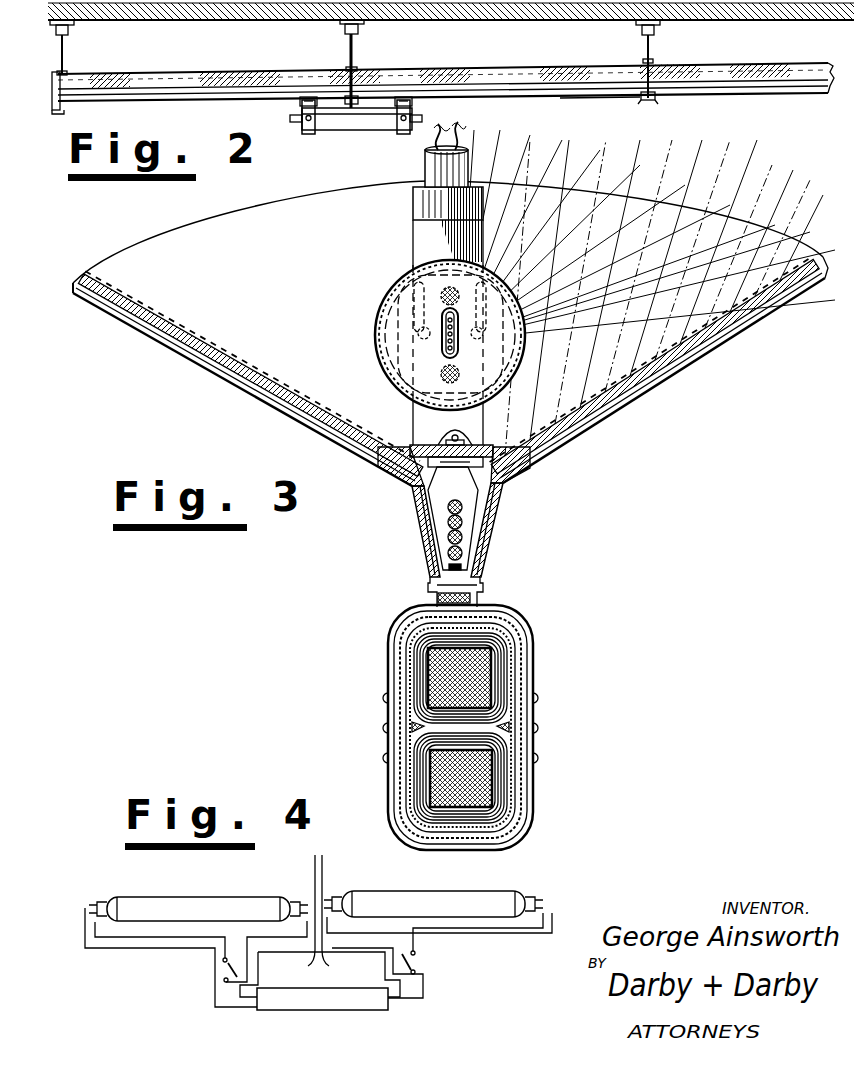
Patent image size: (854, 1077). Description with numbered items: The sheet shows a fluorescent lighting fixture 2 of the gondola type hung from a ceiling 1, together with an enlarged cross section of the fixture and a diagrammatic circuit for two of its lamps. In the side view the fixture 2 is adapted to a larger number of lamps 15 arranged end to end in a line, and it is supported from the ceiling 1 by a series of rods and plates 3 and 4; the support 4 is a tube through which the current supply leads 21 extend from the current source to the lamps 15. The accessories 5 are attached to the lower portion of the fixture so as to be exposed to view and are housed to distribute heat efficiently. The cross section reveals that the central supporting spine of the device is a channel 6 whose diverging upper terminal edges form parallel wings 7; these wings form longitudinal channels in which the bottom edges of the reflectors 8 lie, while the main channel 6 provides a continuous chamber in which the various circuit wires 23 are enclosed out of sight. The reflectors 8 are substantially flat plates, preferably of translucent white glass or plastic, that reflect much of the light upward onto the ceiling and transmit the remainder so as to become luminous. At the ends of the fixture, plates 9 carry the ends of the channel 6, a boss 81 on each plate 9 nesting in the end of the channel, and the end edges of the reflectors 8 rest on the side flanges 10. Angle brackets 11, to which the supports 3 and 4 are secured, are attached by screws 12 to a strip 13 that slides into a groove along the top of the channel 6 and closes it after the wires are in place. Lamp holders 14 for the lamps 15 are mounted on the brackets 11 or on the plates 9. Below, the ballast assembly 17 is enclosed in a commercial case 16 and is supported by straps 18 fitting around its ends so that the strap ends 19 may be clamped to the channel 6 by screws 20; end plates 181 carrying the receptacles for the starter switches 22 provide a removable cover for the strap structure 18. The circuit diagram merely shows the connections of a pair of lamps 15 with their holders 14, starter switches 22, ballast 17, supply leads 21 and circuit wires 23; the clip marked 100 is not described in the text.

In FIG. 2, the ceiling 1 is at (528, 21).
In FIG. 2, the fixture 2 is at (219, 71).
In FIG. 3, the fixture 2 is at (598, 473).
In FIG. 2, the rod and plate support 3 is at (64, 54).
In FIG. 2, the tubular support 4 is at (354, 55).
In FIG. 3, the tubular support 4 is at (425, 168).
In FIG. 2, the accessories 5 is at (350, 130).
In FIG. 3, the accessories 5 is at (560, 740).
In FIG. 2, the channel 6 is at (596, 98).
In FIG. 3, the channel 6 is at (487, 503).
In FIG. 3, the wings 7 is at (380, 478).
In FIG. 2, the reflectors 8 is at (290, 72).
In FIG. 3, the reflectors 8 is at (280, 372).
In FIG. 3, the boss 81 is at (443, 487).
In FIG. 2, the end plates 9 is at (57, 104).
In FIG. 3, the end plates 9 is at (703, 325).
In FIG. 3, the side flanges 10 is at (742, 335).
In FIG. 3, the angle brackets 11 is at (413, 243).
In FIG. 3, the screws 12 is at (450, 425).
In FIG. 3, the strip 13 is at (448, 440).
In FIG. 3, the lamp holders 14 is at (398, 333).
In FIG. 4, the lamp holders 14 is at (97, 903).
In FIG. 3, the lamps 15 is at (378, 300).
In FIG. 4, the lamps 15 is at (197, 897).
In FIG. 3, the case 16 is at (527, 777).
In FIG. 3, the ballast assembly 17 is at (492, 671).
In FIG. 4, the ballast assembly 17 is at (332, 1000).
In FIG. 2, the straps 18 is at (308, 134).
In FIG. 3, the straps 18 is at (500, 613).
In FIG. 3, the end plates of strap structure 181 is at (527, 637).
In FIG. 2, the strap ends 19 is at (307, 97).
In FIG. 3, the strap ends 19 is at (433, 551).
In FIG. 3, the screws 20 is at (483, 590).
In FIG. 3, the current supply leads 21 is at (462, 135).
In FIG. 4, the current supply leads 21 is at (322, 864).
In FIG. 2, the starter switches 22 is at (292, 121).
In FIG. 3, the starter switches 22 is at (473, 690).
In FIG. 4, the starter switches 22 is at (222, 972).
In FIG. 3, the circuit wires 23 is at (447, 537).
In FIG. 4, the circuit wires 23 is at (153, 940).
In FIG. 2, the clip 100 is at (658, 96).